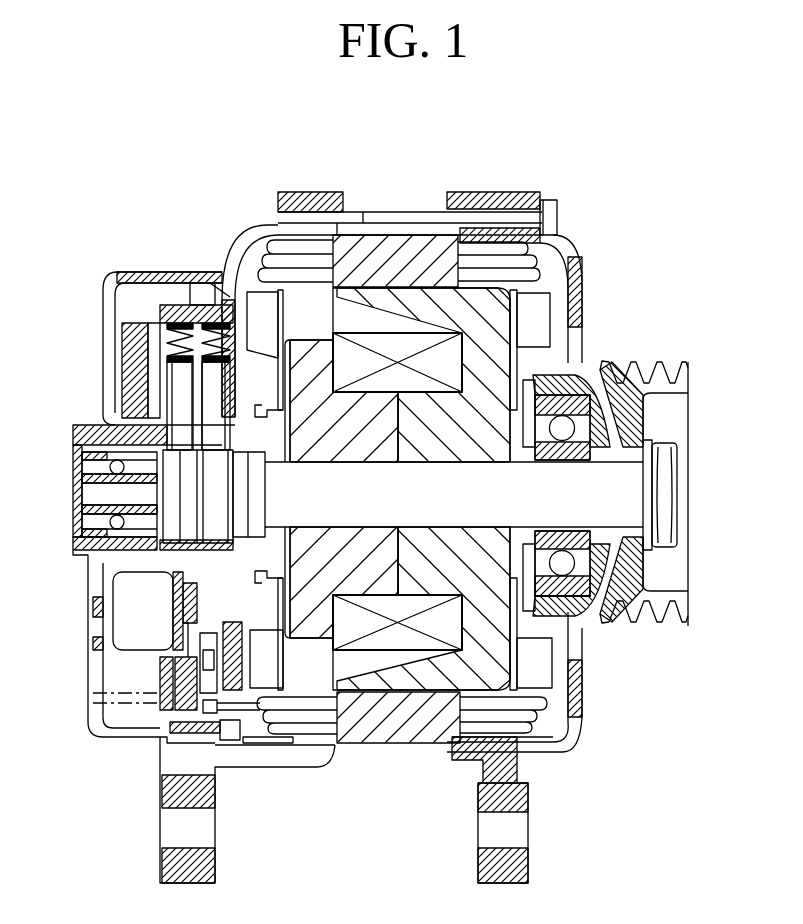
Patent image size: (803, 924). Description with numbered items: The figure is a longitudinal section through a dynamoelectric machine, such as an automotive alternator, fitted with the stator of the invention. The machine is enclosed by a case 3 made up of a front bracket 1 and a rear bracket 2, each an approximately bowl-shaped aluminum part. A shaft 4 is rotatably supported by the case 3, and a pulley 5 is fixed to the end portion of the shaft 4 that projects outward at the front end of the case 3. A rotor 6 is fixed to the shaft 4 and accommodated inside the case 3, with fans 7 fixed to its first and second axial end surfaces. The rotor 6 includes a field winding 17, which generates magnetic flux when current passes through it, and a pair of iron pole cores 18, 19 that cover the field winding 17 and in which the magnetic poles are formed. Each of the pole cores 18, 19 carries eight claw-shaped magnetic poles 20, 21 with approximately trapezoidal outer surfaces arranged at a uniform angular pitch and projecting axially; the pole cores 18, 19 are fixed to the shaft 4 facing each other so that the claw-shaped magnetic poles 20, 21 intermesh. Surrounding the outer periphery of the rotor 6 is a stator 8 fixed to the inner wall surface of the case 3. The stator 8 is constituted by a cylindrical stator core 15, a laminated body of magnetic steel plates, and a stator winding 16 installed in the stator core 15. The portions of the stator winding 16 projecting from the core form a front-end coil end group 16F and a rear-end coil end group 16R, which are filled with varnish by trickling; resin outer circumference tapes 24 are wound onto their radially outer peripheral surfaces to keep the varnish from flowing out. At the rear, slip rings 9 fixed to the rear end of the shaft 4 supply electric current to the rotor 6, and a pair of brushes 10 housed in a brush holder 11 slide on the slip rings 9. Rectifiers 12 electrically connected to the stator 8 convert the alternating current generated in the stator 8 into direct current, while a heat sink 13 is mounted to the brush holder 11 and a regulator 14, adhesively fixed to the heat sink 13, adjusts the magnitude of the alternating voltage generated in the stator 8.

The front bracket 1 is at (586, 297).
The rear bracket 2 is at (108, 272).
The case 3 is at (590, 712).
The shaft 4 is at (612, 510).
The pulley 5 is at (657, 612).
The rotor 6 is at (396, 401).
The fans 7 is at (262, 300).
The stator 8 is at (420, 539).
The slip rings 9 is at (213, 483).
The brushes 10 is at (213, 393).
The brush holder 11 is at (167, 305).
The rectifiers 12 is at (157, 632).
The heat sink 13 is at (135, 345).
The regulator 14 is at (152, 328).
The stator core 15 is at (405, 745).
The stator winding 16 is at (420, 527).
The rear-end coil end group 16R is at (310, 723).
The front-end coil end group 16F is at (520, 725).
The field winding 17 is at (403, 345).
The pole core 18 is at (457, 305).
The pole core 19 is at (327, 307).
The claw-shaped magnetic poles 20 is at (478, 300).
The claw-shaped magnetic poles 21 is at (294, 228).
The resin outer circumference tapes 24 is at (292, 737).